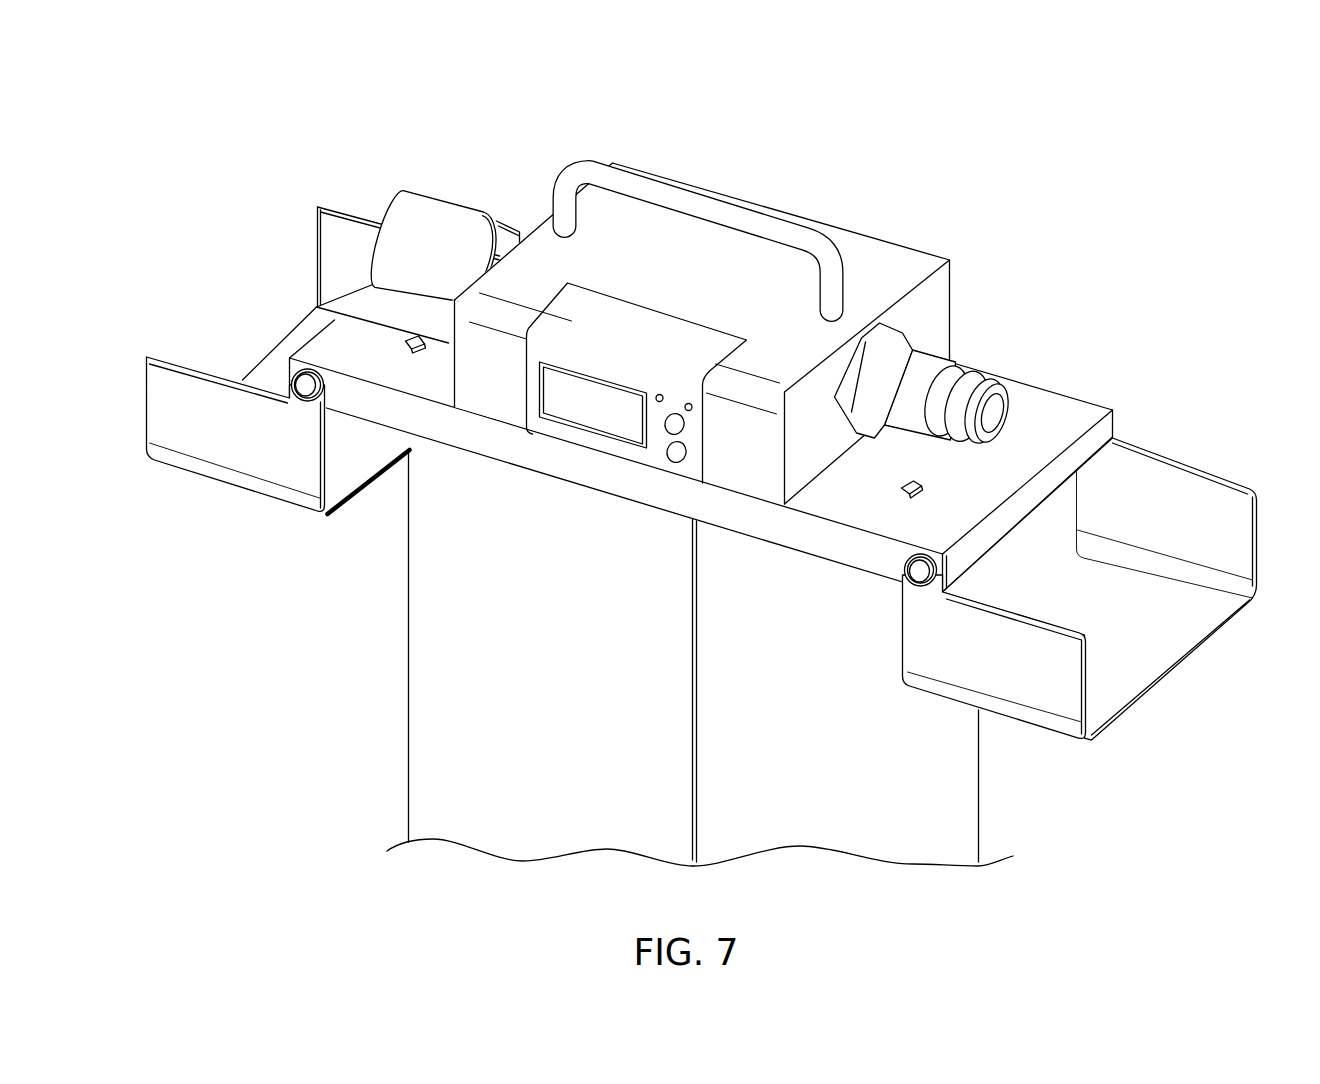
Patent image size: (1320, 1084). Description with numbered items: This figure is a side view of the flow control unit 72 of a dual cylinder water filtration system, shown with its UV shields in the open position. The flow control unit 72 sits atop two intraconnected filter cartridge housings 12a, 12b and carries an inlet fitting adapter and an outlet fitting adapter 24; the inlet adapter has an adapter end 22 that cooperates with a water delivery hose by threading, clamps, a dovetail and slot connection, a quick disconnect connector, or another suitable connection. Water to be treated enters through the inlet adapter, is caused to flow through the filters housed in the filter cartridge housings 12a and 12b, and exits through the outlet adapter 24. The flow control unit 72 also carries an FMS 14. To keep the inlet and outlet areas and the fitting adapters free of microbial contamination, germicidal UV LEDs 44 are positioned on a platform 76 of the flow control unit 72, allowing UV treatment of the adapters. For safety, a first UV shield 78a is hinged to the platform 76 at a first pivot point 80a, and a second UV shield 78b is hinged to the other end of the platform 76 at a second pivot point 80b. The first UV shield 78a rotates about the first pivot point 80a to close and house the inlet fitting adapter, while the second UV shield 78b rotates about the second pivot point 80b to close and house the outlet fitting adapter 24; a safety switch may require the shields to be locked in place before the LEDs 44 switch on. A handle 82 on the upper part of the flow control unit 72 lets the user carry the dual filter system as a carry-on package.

The flow control unit 72 is at (778, 120).
The outlet fitting adapter 24 is at (413, 218).
The handle 82 is at (786, 230).
The adapter end 22 is at (924, 367).
The UV LED 44 is at (410, 338).
The platform 76 is at (390, 368).
The first UV shield 78a is at (1162, 648).
The second UV shield 78b is at (240, 438).
The first pivot point 80a is at (920, 570).
The second pivot point 80b is at (303, 390).
The FMS 14 is at (608, 347).
The filter cartridge housing 12a is at (566, 728).
The filter cartridge housing 12b is at (841, 768).